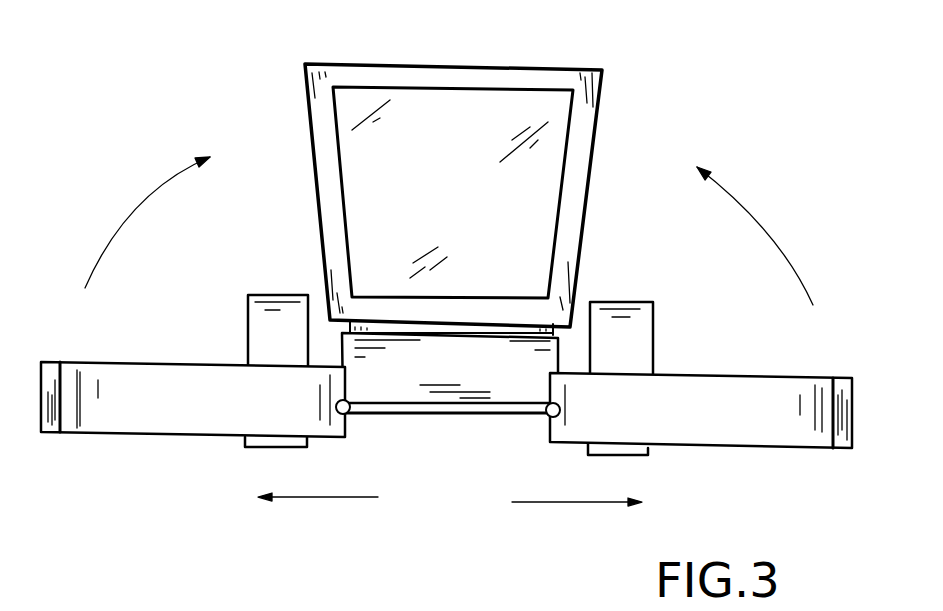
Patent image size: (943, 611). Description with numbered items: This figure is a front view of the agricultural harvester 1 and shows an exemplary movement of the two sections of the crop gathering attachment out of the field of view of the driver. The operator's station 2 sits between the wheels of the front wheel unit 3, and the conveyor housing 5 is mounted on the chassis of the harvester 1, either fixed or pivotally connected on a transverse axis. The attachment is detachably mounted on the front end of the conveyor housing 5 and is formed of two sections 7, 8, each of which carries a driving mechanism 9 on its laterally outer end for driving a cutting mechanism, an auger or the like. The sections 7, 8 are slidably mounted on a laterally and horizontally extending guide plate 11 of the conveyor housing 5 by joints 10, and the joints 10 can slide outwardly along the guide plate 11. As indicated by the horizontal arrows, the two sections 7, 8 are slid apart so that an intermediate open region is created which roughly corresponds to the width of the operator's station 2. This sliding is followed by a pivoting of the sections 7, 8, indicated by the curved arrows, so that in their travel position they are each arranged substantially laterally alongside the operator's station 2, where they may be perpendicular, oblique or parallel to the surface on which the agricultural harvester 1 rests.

The agricultural harvester 1 is at (295, 108).
The operator's station 2 is at (600, 103).
The front wheel unit 3 is at (275, 293).
The conveyor housing 5 is at (484, 345).
The section 7 is at (140, 424).
The section 8 is at (767, 433).
The driving mechanism 9 is at (52, 368).
The joint 10 is at (350, 413).
The guide plate 11 is at (458, 412).